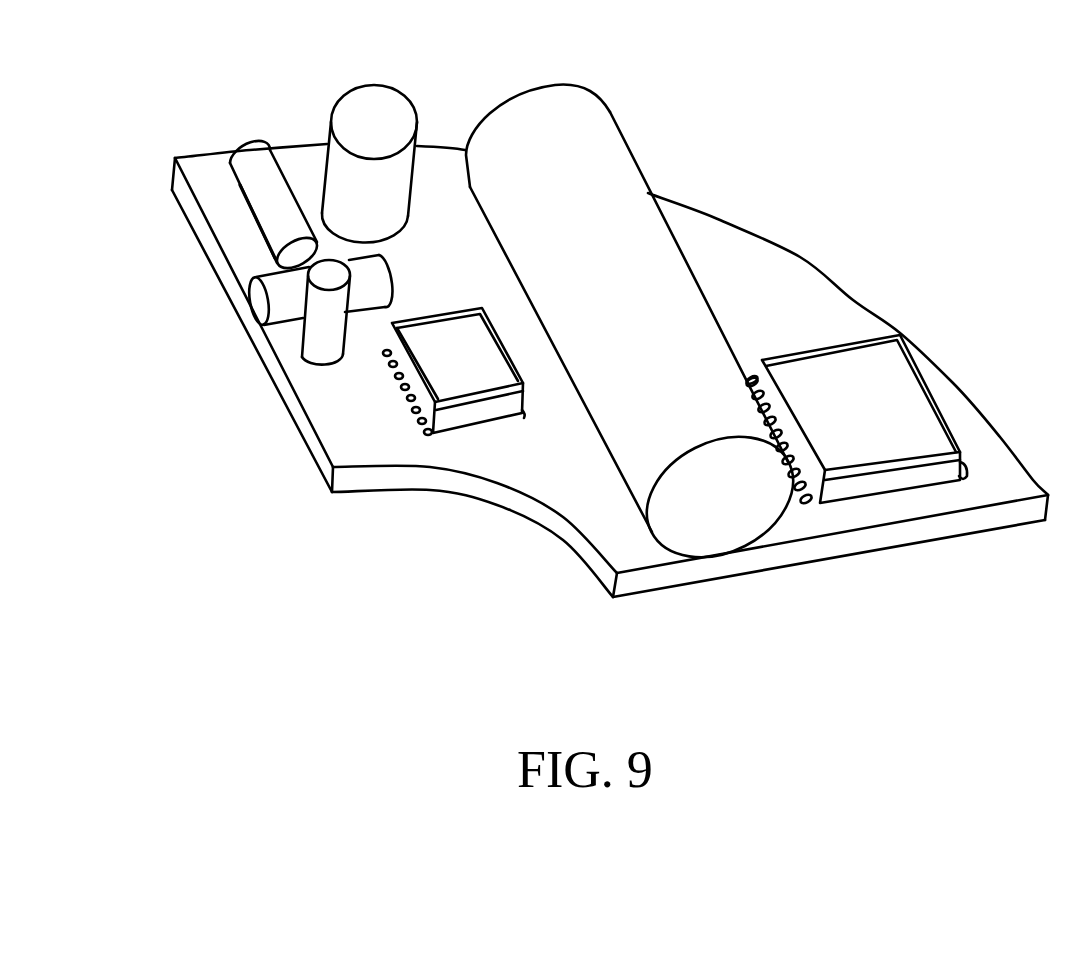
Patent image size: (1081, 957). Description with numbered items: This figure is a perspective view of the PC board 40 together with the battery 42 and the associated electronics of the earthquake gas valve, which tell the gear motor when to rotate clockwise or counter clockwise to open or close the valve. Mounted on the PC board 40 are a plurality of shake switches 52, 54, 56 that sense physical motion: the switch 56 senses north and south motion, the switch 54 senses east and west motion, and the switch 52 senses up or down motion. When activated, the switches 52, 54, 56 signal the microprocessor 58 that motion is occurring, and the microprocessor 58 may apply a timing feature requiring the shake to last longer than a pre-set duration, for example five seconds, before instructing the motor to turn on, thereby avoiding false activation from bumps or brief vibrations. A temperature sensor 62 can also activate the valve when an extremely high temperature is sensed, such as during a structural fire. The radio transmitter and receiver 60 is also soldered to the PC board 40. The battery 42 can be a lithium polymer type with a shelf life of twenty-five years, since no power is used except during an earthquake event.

The PC board 40 is at (757, 265).
The battery 42 is at (590, 160).
The shake switch 52 is at (312, 328).
The shake switch 54 is at (255, 305).
The shake switch 56 is at (253, 191).
The microprocessor 58 is at (462, 387).
The radio transmitter and receiver 60 is at (892, 393).
The temperature sensor 62 is at (392, 115).